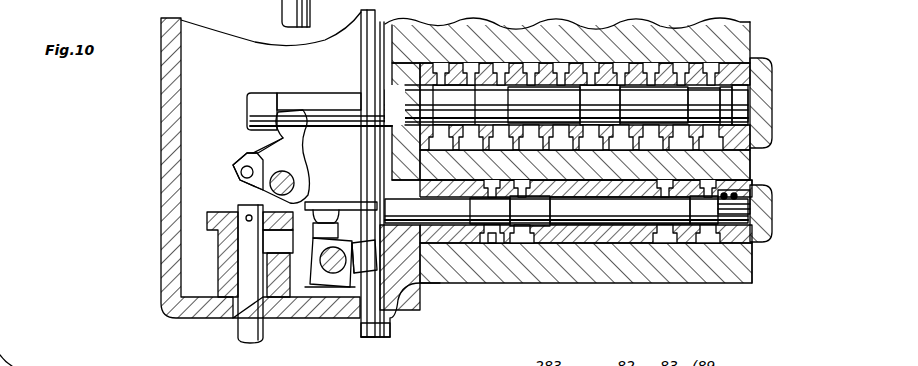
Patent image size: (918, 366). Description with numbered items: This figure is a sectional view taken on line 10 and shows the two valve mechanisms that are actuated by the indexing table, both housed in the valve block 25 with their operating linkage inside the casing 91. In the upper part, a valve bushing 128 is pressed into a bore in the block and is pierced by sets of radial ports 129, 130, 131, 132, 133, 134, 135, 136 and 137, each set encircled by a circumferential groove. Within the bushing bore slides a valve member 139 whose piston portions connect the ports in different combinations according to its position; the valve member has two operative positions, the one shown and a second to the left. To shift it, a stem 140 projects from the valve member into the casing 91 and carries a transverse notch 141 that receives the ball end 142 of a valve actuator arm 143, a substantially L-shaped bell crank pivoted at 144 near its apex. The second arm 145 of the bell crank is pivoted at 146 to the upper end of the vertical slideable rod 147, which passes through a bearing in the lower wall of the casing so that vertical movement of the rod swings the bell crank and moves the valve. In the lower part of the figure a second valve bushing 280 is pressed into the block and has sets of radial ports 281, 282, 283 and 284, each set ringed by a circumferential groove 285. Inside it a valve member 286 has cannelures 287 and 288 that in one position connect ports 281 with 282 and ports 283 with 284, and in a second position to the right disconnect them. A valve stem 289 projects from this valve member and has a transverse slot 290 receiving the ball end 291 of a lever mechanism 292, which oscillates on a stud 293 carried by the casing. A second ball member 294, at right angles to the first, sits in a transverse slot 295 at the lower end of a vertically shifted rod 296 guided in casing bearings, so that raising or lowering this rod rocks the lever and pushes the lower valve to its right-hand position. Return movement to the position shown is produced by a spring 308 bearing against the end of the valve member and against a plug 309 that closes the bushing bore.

The section line 10 is at (284, 5).
The upper housing body 25 is at (752, 36).
The casing 91 is at (166, 103).
The valve bushing 128 is at (760, 62).
The radial ports 129 is at (437, 66).
The radial ports 130 is at (467, 66).
The radial ports 131 is at (500, 66).
The radial ports 132 is at (530, 70).
The radial ports 133 is at (560, 72).
The radial ports 134 is at (592, 74).
The radial ports 135 is at (624, 74).
The radial ports 136 is at (660, 74).
The radial ports 137 is at (698, 74).
The valve member 139 is at (378, 100).
The stem 140 is at (322, 96).
The transverse notch 141 is at (280, 93).
The ball end 142 is at (306, 130).
The valve actuator arm 143 is at (300, 168).
The pivot 144 is at (296, 183).
The second arm 145 is at (240, 173).
The pivot 146 is at (250, 158).
The vertical slideable rod 147 is at (240, 335).
The valve bushing 280 is at (756, 176).
The radial ports 281 is at (492, 240).
The radial ports 282 is at (516, 243).
The radial ports 283 is at (662, 243).
The radial ports 284 is at (703, 243).
The circumferential groove 285 is at (658, 243).
The valve member 286 is at (437, 287).
The cannelure 287 is at (503, 243).
The cannelure 288 is at (612, 225).
The valve stem 289 is at (412, 209).
The transverse slot 290 is at (332, 194).
The ball end 291 is at (313, 250).
The lever mechanism 292 is at (330, 284).
The stud 293 is at (332, 287).
The ball member 294 is at (348, 275).
The transverse slot 295 is at (372, 340).
The vertically shifted rod 296 is at (361, 43).
The spring 308 is at (765, 192).
The plug 309 is at (770, 222).